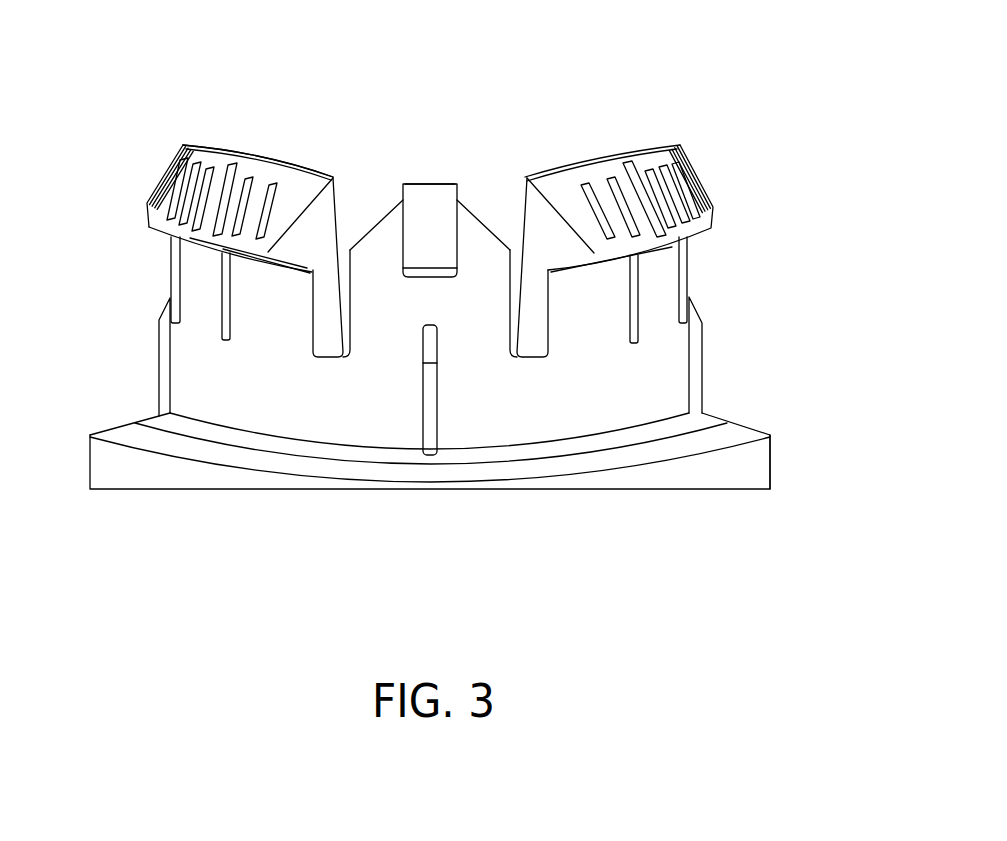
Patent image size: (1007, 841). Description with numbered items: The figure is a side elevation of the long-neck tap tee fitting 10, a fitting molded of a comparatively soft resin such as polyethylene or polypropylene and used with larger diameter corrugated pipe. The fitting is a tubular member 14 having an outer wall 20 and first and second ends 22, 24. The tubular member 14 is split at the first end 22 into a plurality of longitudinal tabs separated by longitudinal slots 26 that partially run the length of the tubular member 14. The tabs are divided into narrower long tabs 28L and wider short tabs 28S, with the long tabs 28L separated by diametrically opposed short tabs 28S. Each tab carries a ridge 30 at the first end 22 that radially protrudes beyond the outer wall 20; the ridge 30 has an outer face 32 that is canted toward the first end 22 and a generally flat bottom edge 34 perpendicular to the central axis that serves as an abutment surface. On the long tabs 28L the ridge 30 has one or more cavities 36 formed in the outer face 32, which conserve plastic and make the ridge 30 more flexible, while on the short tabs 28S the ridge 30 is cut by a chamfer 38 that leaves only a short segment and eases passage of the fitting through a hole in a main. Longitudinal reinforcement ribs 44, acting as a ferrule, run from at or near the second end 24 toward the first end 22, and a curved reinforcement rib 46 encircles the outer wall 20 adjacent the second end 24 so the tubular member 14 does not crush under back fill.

The long-neck tap tee fitting 10 is at (737, 133).
The tubular member 14 is at (162, 273).
The outer wall 20 is at (588, 365).
The first end 22 is at (214, 142).
The second end 24 is at (349, 495).
The longitudinal slots 26 is at (227, 310).
The long tabs 28L is at (602, 175).
The short tabs 28S is at (440, 210).
The ridge 30 is at (280, 173).
The outer face 32 is at (200, 163).
The bottom edge 34 is at (270, 267).
The cavities 36 is at (170, 236).
The chamfer 38 is at (477, 217).
The longitudinal reinforcement ribs 44 is at (158, 348).
The curved reinforcement rib 46 is at (772, 460).